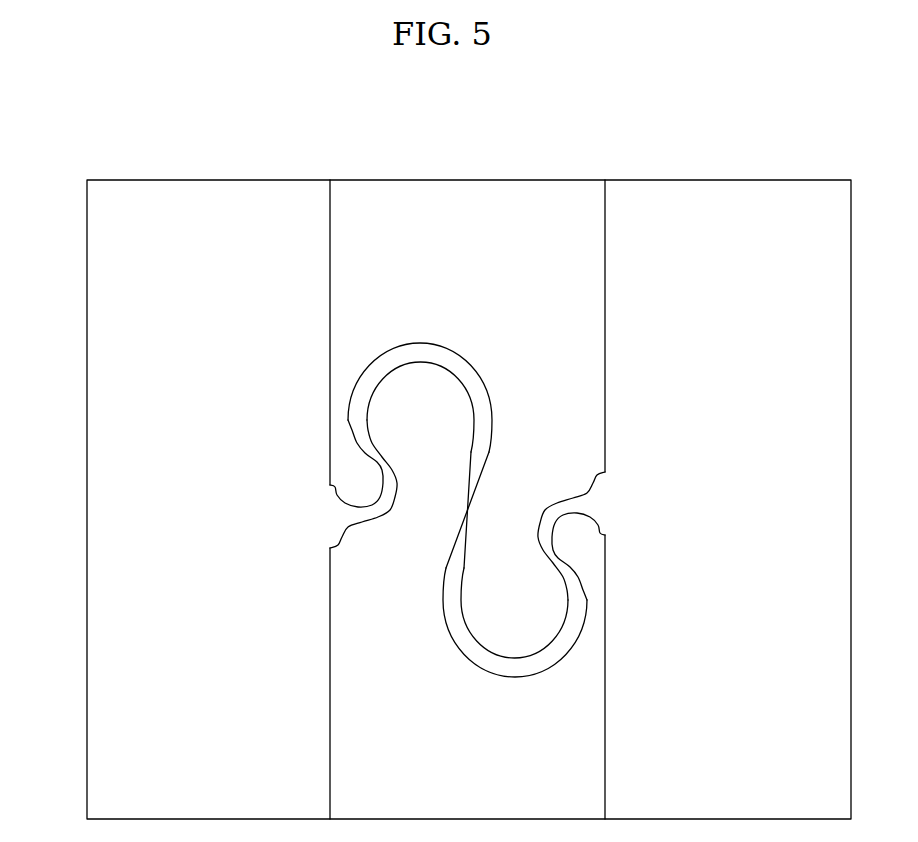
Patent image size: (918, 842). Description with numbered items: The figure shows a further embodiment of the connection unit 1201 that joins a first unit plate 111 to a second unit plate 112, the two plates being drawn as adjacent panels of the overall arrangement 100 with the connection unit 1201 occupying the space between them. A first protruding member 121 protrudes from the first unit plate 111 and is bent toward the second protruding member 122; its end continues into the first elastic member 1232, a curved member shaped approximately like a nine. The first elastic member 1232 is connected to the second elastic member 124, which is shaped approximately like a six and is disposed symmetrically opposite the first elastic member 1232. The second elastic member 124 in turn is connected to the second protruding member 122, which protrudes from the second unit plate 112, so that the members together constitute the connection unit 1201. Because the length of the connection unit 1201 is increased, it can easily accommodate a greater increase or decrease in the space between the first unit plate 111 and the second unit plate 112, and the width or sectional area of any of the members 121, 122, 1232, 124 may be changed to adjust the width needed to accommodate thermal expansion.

The secondary battery 100 is at (81, 132).
The first unit plate 111 is at (208, 212).
The second unit plate 112 is at (750, 208).
The first protruding member 121 is at (380, 505).
The second protruding member 122 is at (563, 507).
The second elastic member 124 is at (515, 668).
The first elastic member 1232 is at (421, 352).
The connection unit 1201 is at (425, 678).